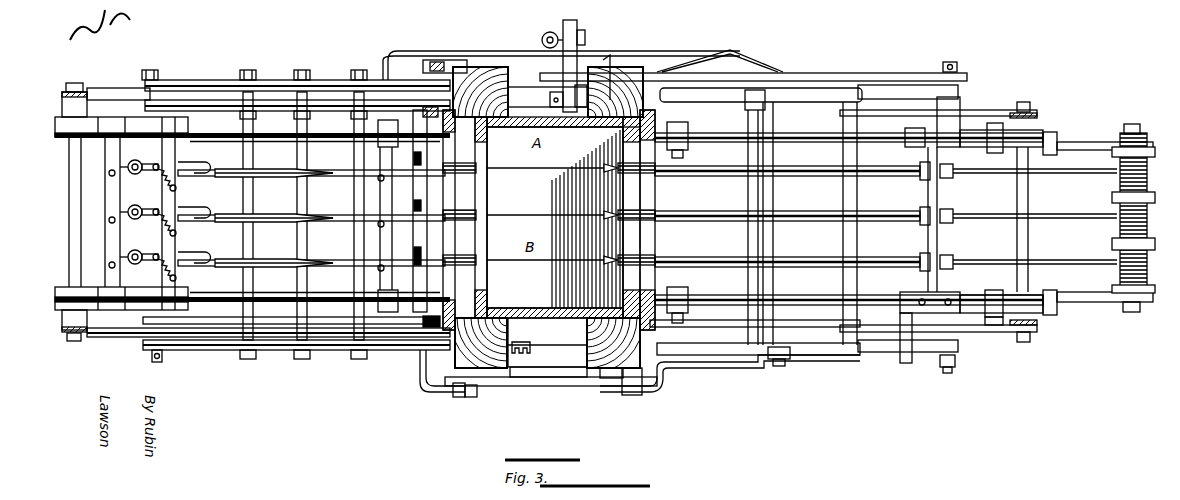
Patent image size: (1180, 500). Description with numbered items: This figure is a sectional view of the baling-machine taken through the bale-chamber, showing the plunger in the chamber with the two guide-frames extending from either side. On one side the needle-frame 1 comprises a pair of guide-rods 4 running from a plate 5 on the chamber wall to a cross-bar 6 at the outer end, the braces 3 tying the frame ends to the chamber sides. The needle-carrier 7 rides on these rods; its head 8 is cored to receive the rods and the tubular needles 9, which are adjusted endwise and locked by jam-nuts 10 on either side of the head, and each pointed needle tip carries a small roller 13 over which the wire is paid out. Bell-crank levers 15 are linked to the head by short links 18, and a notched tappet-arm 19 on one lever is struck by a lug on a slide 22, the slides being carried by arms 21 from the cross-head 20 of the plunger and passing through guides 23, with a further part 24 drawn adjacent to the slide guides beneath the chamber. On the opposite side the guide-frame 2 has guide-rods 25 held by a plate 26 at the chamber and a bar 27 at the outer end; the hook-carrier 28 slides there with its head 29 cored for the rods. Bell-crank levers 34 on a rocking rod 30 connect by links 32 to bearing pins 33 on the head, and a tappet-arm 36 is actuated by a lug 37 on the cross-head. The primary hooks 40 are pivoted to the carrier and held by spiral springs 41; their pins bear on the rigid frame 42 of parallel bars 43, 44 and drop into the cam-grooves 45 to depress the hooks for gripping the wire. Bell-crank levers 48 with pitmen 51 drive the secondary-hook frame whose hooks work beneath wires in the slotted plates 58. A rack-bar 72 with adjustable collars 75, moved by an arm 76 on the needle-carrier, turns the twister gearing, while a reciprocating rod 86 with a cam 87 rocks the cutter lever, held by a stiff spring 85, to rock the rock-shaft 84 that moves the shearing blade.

The needle-frame 1 is at (785, 217).
The guide-frame 2 is at (178, 138).
The brace 3 is at (117, 337).
The guide-rod 4 is at (849, 220).
The plate 5 is at (656, 190).
The cross-bar 6 is at (1029, 192).
The needle-carrier 7 is at (930, 195).
The head 8 is at (912, 293).
The needle 9 is at (830, 176).
The jam-nut 10 is at (948, 180).
The roller 13 is at (624, 206).
The bell-crank lever 15 is at (790, 90).
The link 18 is at (888, 95).
The tappet-arm 19 is at (663, 388).
The cross-head 20 is at (515, 386).
The arm 21 is at (470, 398).
The slide 22 is at (614, 382).
The guide 23 is at (416, 394).
The block 24 is at (633, 396).
The guide-rod 25 is at (266, 142).
The plate 26 is at (460, 180).
The bar 27 is at (119, 212).
The hook-carrier 28 is at (188, 160).
The head 29 is at (180, 200).
The rocking rod 30 is at (381, 216).
The link 32 is at (254, 218).
The bearing pin 33 is at (158, 363).
The bell-crank lever 34 is at (328, 92).
The tappet-arm 36 is at (455, 398).
The lug 37 is at (472, 398).
The hook 40 is at (214, 211).
The spiral spring 41 is at (158, 255).
The rigid frame 42 is at (266, 180).
The bar 43 is at (252, 240).
The bar 44 is at (158, 200).
The cam-groove 45 is at (318, 226).
The bell-crank lever 48 is at (346, 72).
The pitman 51 is at (432, 328).
The slotted plate 58 is at (422, 178).
The rack-bar 72 is at (547, 347).
The adjustable collar 75 is at (784, 366).
The arm 76 is at (907, 364).
The rock-shaft 84 is at (505, 98).
The spring 85 is at (610, 45).
The reciprocating rod 86 is at (465, 62).
The cam 87 is at (720, 53).